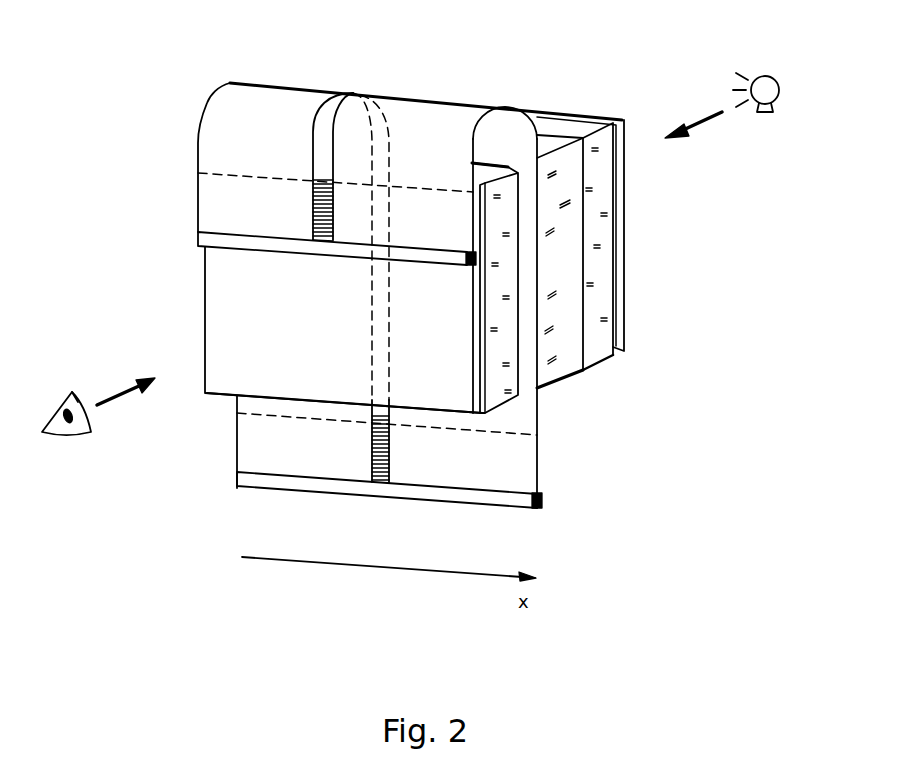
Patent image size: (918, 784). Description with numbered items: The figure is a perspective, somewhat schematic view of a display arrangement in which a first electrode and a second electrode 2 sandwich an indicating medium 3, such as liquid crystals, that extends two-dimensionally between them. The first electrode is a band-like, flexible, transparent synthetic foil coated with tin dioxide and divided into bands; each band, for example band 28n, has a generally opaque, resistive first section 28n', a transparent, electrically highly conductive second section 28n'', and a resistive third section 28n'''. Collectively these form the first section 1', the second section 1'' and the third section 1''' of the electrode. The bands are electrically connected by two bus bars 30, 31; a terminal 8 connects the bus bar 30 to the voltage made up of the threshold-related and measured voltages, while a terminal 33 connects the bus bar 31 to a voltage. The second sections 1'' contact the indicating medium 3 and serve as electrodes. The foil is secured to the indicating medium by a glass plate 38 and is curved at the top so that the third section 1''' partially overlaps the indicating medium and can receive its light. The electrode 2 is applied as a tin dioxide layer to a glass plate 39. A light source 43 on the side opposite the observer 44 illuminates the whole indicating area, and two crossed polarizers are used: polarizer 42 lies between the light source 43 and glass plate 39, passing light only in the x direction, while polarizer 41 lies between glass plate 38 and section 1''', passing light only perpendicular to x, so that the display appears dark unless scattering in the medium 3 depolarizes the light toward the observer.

The first section of electrode band 1' is at (466, 329).
The second section of electrode band 1'' is at (586, 245).
The third section of electrode band 1''' is at (369, 248).
The electrode 2 is at (583, 212).
The indicating medium 3 is at (573, 277).
The terminal 8 is at (541, 504).
The first section of band 28n 28n' is at (345, 470).
The second section of band 28n 28n'' is at (334, 212).
The third section of band 28n 28n''' is at (217, 193).
The bus bar 30 is at (478, 497).
The bus bar 31 is at (283, 248).
The terminal 33 is at (468, 252).
The glass plate 38 is at (503, 382).
The glass plate 39 is at (603, 322).
The polarizer 41 is at (435, 406).
The polarizer 42 is at (624, 259).
The light source 43 is at (760, 81).
The observer 44 is at (60, 433).